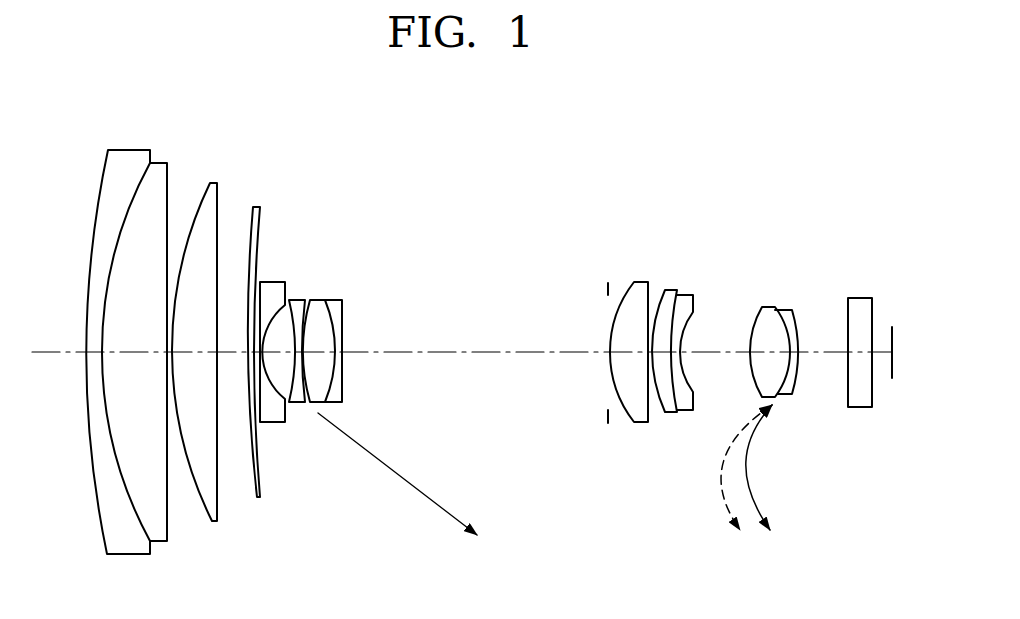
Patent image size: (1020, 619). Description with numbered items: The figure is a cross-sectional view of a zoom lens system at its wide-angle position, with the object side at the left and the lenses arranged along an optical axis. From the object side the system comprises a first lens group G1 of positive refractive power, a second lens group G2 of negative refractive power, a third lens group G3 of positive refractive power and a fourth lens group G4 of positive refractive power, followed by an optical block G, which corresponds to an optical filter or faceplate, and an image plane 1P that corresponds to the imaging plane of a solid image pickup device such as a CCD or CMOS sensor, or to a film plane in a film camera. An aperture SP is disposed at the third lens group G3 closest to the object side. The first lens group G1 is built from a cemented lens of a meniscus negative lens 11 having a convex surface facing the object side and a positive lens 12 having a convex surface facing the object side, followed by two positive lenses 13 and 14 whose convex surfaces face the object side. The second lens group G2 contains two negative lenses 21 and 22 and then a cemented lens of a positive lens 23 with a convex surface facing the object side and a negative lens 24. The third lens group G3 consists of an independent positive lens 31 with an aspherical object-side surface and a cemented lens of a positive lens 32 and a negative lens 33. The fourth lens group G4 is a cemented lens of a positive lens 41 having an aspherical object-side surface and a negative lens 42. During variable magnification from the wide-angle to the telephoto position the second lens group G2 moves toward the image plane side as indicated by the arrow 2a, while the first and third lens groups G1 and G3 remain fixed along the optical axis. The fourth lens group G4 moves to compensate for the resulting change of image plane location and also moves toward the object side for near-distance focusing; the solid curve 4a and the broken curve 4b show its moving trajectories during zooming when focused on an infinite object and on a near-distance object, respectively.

The negative lens 11 is at (127, 548).
The positive lens 12 is at (158, 538).
The positive lens 13 is at (213, 522).
The positive lens 14 is at (256, 498).
The negative lens 21 is at (275, 421).
The negative lens 22 is at (295, 403).
The positive lens 23 is at (325, 388).
The negative lens 24 is at (337, 383).
The arrow 2a is at (397, 474).
The positive lens 31 is at (640, 422).
The positive lens 32 is at (670, 412).
The negative lens 33 is at (692, 405).
The positive lens 41 is at (760, 377).
The negative lens 42 is at (787, 393).
The solid curve 4a is at (775, 469).
The broken curve 4b is at (733, 469).
The aperture SP is at (608, 424).
The first lens group G1 is at (263, 140).
The second lens group G2 is at (345, 275).
The third lens group G3 is at (698, 275).
The fourth lens group G4 is at (802, 275).
The optical block G is at (875, 275).
The image plane 1P is at (891, 379).